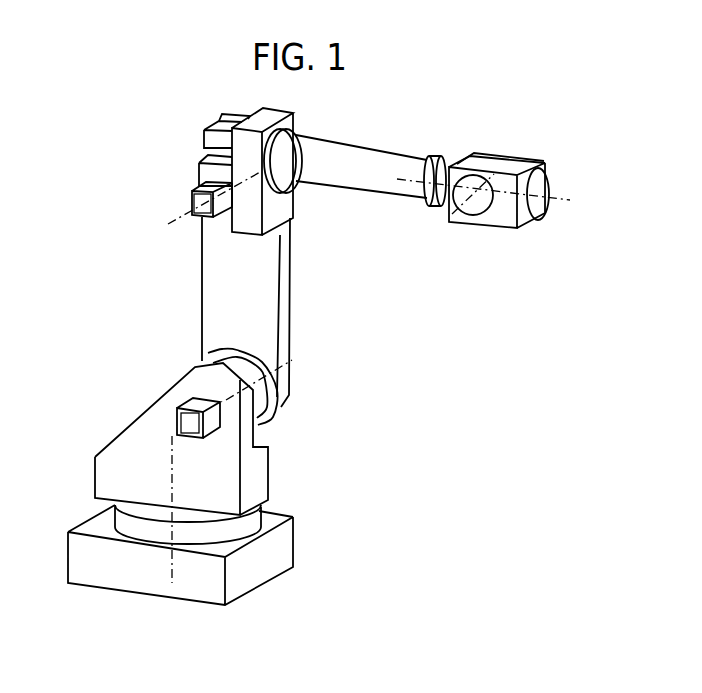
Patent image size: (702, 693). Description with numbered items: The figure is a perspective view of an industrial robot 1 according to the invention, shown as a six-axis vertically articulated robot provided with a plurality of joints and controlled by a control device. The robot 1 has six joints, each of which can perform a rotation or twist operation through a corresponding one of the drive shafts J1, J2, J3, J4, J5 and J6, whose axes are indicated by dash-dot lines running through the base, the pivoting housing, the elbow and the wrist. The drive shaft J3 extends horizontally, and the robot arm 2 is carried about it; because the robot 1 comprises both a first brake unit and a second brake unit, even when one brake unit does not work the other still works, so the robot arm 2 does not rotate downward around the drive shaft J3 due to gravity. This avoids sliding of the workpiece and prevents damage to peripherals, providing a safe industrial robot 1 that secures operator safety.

The robot 1 is at (396, 363).
The robot arm 2 is at (353, 220).
The drive shaft J1 is at (173, 469).
The drive shaft J2 is at (257, 423).
The drive shaft J3 is at (190, 213).
The drive shaft J4 is at (397, 179).
The drive shaft J5 is at (447, 218).
The drive shaft J6 is at (555, 193).